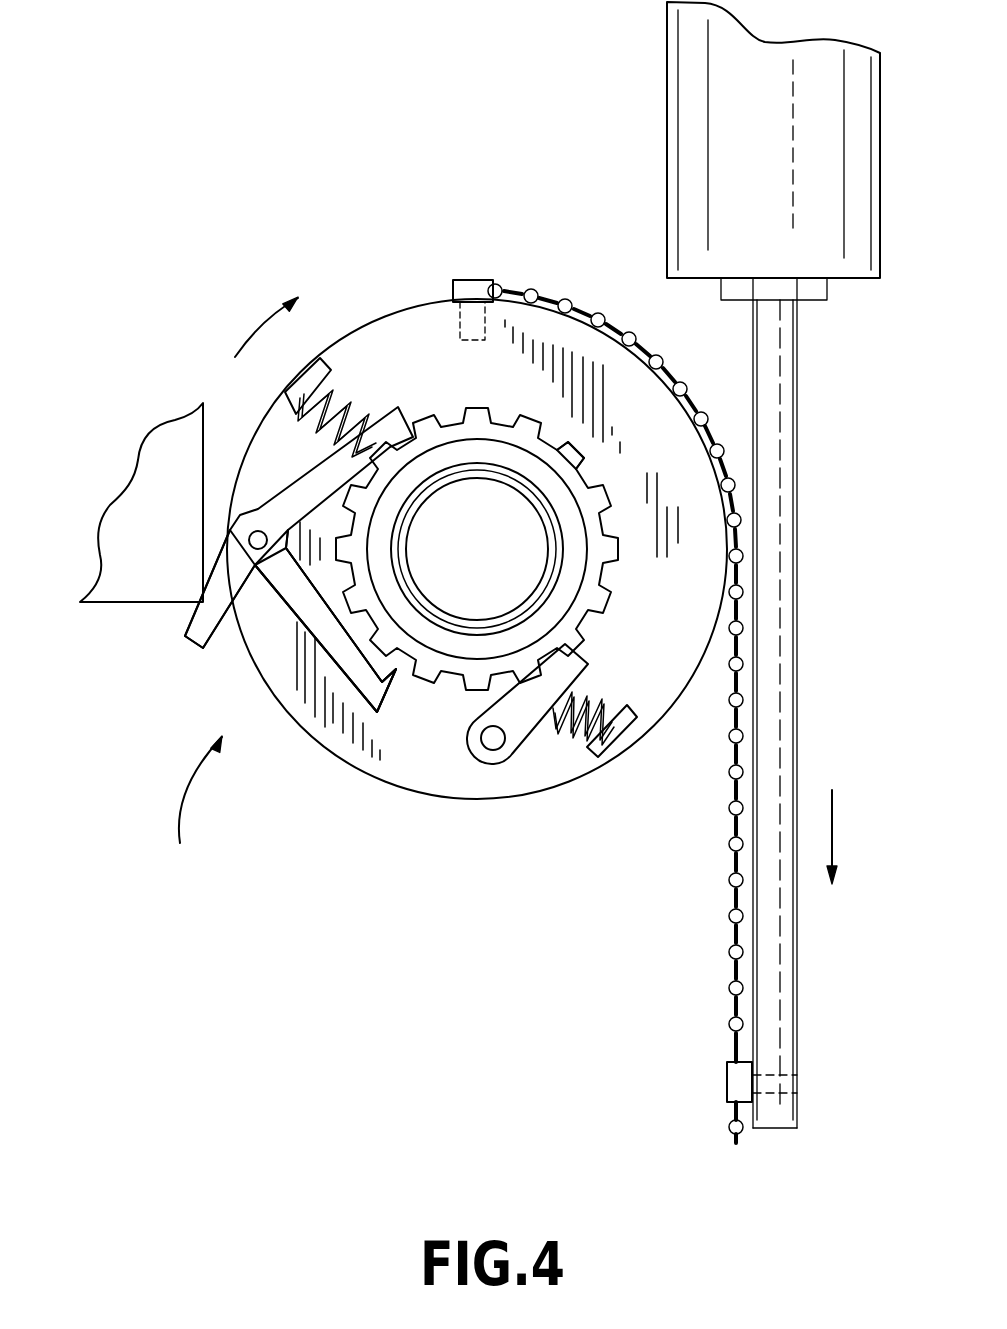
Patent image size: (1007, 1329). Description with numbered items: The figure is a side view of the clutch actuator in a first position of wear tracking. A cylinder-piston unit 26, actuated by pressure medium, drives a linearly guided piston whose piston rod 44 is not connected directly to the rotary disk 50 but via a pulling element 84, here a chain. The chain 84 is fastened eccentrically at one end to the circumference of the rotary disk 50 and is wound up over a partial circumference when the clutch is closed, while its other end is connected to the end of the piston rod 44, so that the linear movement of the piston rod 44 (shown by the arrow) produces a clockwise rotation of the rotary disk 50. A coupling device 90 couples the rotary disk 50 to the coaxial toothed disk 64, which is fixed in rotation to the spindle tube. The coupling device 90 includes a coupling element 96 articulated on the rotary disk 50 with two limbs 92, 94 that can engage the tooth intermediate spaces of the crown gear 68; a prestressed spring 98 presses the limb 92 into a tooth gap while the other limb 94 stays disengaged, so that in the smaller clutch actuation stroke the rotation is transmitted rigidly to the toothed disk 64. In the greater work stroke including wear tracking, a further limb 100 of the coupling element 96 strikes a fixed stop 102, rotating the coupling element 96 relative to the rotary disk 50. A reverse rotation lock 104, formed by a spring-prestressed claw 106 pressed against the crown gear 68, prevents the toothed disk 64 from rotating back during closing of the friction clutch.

The cylinder-piston unit 26 is at (668, 60).
The piston rod 44 is at (792, 356).
The rotary disk 50 is at (516, 778).
The toothed disk 64 is at (608, 602).
The crown gear 68 is at (583, 473).
The pulling element 84 is at (730, 1000).
The coupling device 90 is at (179, 812).
The limb 92 is at (308, 477).
The limb 94 is at (332, 648).
The coupling element 96 is at (283, 595).
The prestressed spring 98 is at (335, 400).
The further limb 100 is at (193, 622).
The fixed stop 102 is at (130, 518).
The reverse rotation lock 104 is at (565, 750).
The claw 106 is at (483, 755).